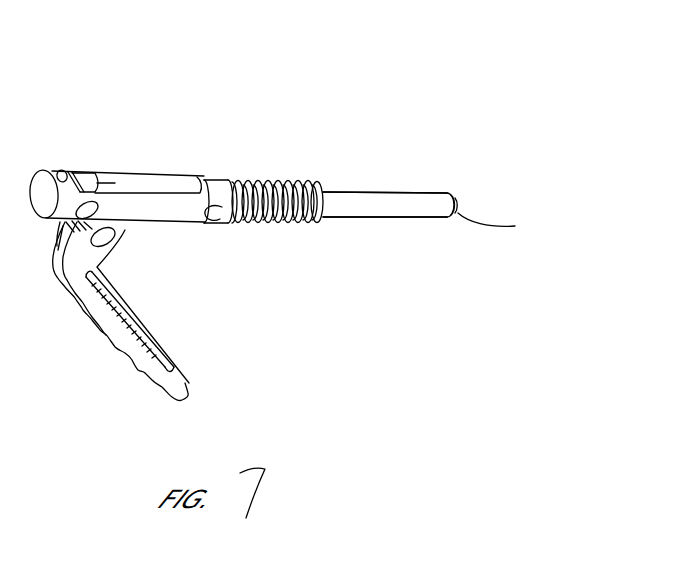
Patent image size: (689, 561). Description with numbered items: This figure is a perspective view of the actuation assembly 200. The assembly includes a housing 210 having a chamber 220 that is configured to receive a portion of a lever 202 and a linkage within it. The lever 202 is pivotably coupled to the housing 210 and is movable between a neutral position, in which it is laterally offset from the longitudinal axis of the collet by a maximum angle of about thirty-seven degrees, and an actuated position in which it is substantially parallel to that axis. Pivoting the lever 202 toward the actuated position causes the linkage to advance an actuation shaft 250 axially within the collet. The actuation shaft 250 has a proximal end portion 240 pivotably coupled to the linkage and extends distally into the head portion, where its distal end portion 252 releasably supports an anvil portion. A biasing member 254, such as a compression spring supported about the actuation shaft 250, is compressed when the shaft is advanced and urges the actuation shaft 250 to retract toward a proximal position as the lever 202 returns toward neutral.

The actuation assembly 200 is at (304, 136).
The lever 202 is at (163, 387).
The housing 210 is at (168, 207).
The chamber 220 is at (108, 175).
The proximal end portion 240 is at (215, 182).
The actuation shaft 250 is at (400, 193).
The distal end portion 252 is at (585, 206).
The biasing member 254 is at (290, 222).